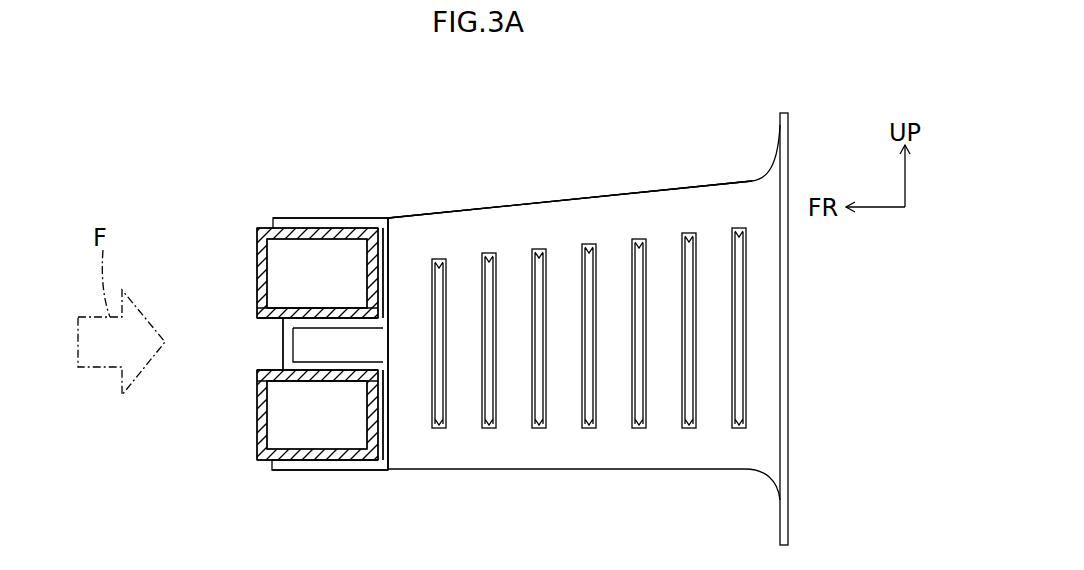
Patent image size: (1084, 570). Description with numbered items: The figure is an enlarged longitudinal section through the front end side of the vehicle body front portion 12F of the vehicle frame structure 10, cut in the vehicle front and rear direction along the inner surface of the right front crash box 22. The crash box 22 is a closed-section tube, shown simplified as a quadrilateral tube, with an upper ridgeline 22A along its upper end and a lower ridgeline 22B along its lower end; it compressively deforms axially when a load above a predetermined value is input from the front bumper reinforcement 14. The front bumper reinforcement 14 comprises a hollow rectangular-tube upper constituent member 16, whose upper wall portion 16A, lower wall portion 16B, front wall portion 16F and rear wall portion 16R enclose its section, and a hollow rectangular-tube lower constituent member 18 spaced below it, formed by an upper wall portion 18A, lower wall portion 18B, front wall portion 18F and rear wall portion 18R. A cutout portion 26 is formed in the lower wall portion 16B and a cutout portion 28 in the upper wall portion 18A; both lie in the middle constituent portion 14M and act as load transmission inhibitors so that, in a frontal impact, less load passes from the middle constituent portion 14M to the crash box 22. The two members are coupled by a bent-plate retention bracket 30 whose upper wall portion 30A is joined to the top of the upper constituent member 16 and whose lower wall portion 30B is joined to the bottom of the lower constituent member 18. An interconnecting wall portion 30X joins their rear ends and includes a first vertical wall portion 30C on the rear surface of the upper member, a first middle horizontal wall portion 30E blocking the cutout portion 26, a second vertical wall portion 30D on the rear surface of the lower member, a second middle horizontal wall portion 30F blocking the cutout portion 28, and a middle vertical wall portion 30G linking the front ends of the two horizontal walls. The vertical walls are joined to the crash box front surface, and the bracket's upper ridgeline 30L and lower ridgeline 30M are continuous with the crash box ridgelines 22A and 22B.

The vehicle frame structure 10 is at (484, 146).
The vehicle body front portion 12F is at (548, 137).
The front bumper reinforcement 14 is at (224, 232).
The middle constituent portion 14M is at (226, 297).
The upper constituent member 16 is at (222, 274).
The upper wall portion 16A is at (318, 218).
The lower wall portion 16B is at (353, 300).
The front wall portion 16F is at (256, 262).
The rear wall portion 16R is at (390, 255).
The lower constituent member 18 is at (225, 410).
The upper wall portion 18A is at (358, 384).
The lower wall portion 18B is at (292, 461).
The front wall portion 18F is at (256, 428).
The rear wall portion 18R is at (389, 447).
The crash box 22 is at (596, 167).
The upper ridgeline 22A is at (658, 193).
The lower ridgeline 22B is at (555, 470).
The cutout portion 26 is at (300, 300).
The cutout portion 28 is at (302, 378).
The retention bracket 30 is at (353, 208).
The upper wall portion 30A is at (343, 218).
The lower wall portion 30B is at (331, 471).
The first vertical wall portion 30C is at (390, 237).
The second vertical wall portion 30D is at (390, 411).
The first middle horizontal wall portion 30E is at (388, 327).
The second middle horizontal wall portion 30F is at (388, 362).
The middle vertical wall portion 30G is at (284, 350).
The upper ridgeline 30L is at (368, 218).
The lower ridgeline 30M is at (341, 471).
The interconnecting wall portion 30X is at (395, 287).